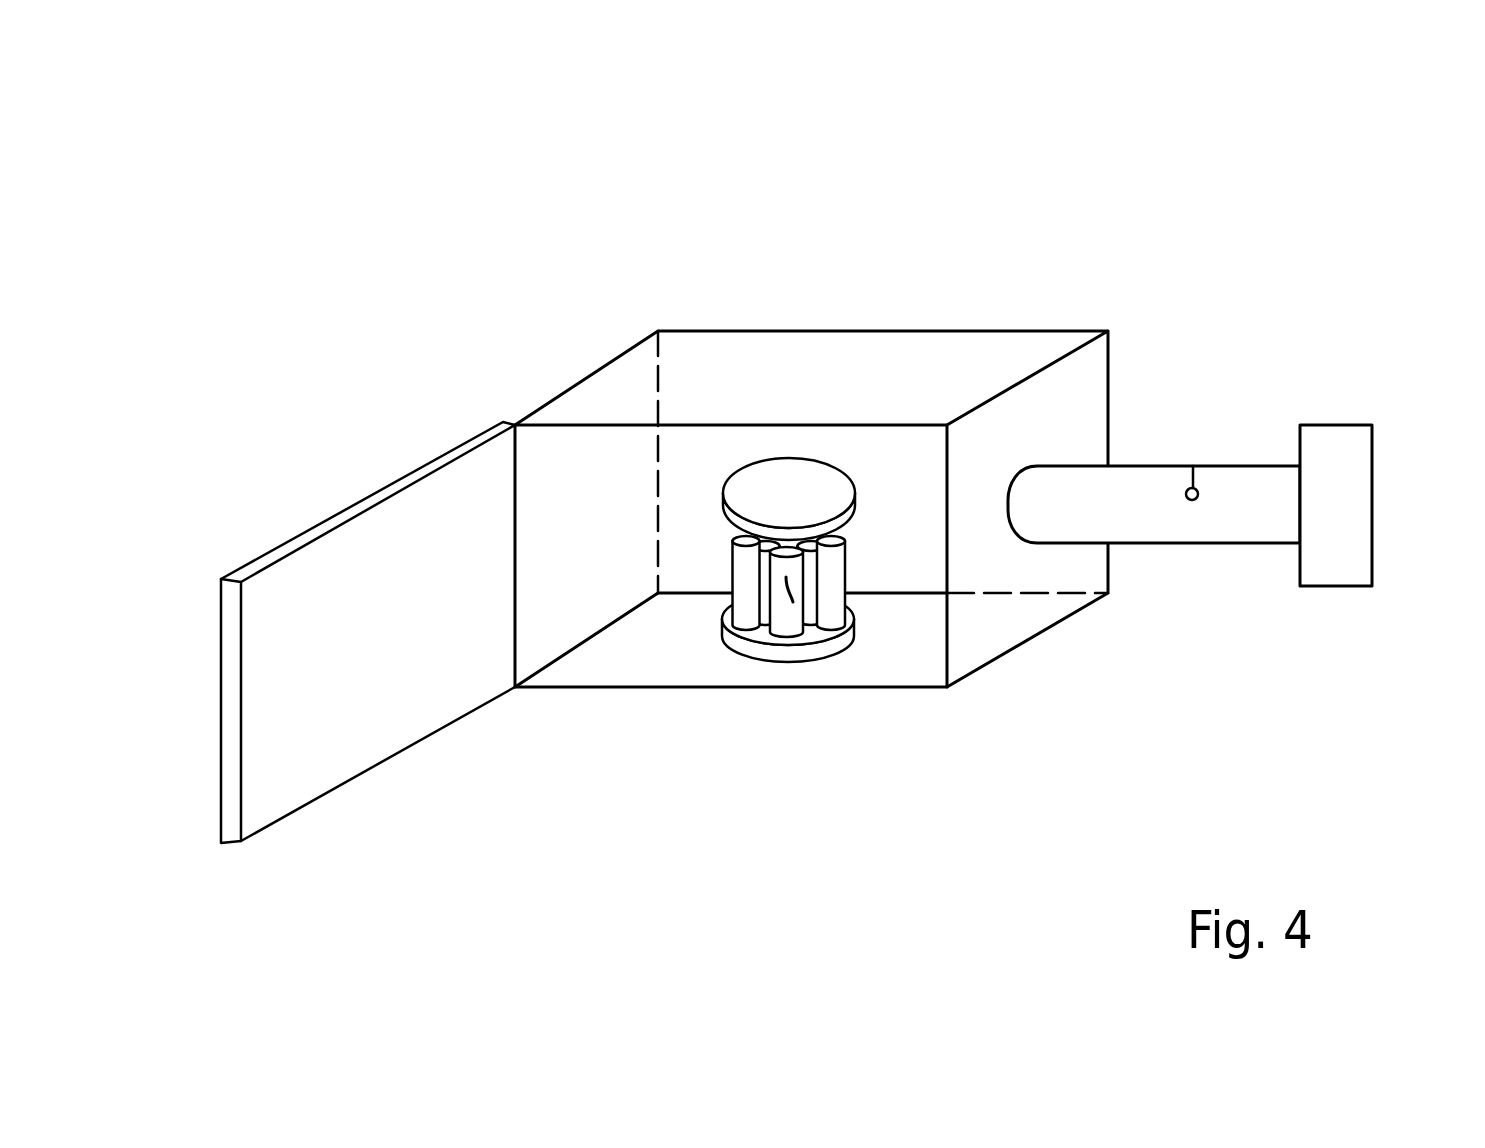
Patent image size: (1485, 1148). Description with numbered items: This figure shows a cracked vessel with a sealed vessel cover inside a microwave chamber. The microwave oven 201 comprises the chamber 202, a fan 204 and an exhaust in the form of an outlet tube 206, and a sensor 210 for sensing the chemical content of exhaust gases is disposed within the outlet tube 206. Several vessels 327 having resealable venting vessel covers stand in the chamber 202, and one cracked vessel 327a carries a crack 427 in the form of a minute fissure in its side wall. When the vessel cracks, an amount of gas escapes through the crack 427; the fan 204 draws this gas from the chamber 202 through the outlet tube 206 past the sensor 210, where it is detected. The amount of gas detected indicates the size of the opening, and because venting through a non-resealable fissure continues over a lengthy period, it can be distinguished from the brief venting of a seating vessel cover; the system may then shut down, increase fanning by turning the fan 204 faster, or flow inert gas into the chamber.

The microwave oven 201 is at (950, 347).
The chamber 202 is at (888, 445).
The fan 204 is at (1338, 563).
The outlet tube 206 is at (1253, 520).
The sensor 210 is at (1200, 487).
The vessel 327 is at (609, 561).
The cracked vessel 327a is at (785, 625).
The crack 427 is at (785, 585).